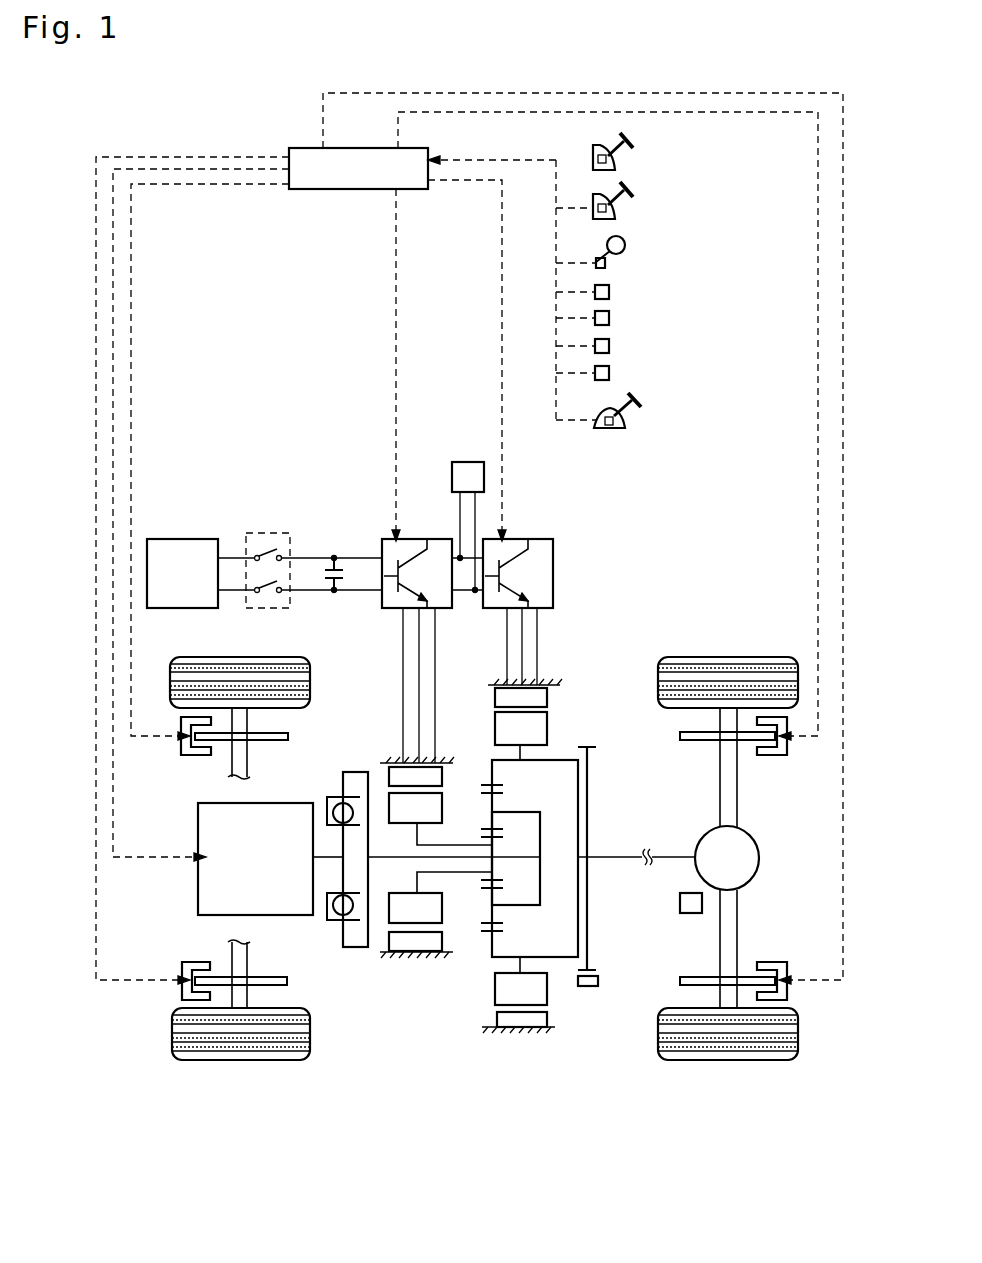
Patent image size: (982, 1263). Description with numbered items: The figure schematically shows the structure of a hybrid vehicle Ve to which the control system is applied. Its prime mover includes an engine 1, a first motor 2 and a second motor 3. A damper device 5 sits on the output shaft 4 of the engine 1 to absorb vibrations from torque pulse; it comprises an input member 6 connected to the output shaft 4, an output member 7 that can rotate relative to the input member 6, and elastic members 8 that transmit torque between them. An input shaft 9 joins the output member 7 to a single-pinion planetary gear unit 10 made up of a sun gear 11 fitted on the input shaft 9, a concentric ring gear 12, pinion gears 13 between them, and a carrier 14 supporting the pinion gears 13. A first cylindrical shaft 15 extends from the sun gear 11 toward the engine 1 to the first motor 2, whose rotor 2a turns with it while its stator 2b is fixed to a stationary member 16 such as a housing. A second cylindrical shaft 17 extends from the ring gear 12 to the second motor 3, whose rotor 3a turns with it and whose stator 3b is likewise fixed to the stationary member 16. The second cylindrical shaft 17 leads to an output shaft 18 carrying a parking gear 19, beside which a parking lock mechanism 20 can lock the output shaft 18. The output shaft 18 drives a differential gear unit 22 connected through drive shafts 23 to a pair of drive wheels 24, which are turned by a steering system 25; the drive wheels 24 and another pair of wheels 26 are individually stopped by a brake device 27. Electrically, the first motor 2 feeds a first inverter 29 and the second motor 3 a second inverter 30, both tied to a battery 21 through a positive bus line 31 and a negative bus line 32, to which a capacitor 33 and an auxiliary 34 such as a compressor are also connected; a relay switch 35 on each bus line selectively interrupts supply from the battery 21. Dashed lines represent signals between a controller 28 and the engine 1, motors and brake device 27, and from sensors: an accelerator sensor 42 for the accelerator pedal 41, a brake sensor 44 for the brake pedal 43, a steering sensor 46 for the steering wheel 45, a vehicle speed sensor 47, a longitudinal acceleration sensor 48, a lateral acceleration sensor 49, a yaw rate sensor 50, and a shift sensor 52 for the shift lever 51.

The engine 1 is at (197, 886).
The first motor 2 is at (393, 748).
The rotor 2a is at (410, 904).
The stator 2b is at (426, 937).
The second motor 3 is at (559, 704).
The rotor 3a is at (497, 993).
The stator 3b is at (544, 1018).
The output shaft 4 is at (326, 812).
The damper device 5 is at (325, 855).
The input member 6 is at (333, 905).
The output member 7 is at (348, 950).
The elastic members 8 is at (338, 795).
The input shaft 9 is at (400, 857).
The single-pinion planetary gear unit 10 is at (488, 756).
The sun gear 11 is at (500, 885).
The ring gear 12 is at (487, 934).
The pinion gears 13 is at (498, 924).
The carrier 14 is at (534, 811).
The first cylindrical shaft 15 is at (466, 844).
The stationary member 16 is at (400, 964).
The second cylindrical shaft 17 is at (563, 757).
The output shaft 18 is at (632, 855).
The parking gear 19 is at (588, 772).
The parking lock mechanism 20 is at (604, 991).
The battery 21 is at (190, 538).
The differential gear unit 22 is at (760, 855).
The drive shafts 23 is at (722, 798).
The drive wheels 24 is at (716, 656).
The steering system 25 is at (680, 901).
The wheels 26 is at (266, 656).
The brake device 27 is at (190, 755).
The controller 28 is at (346, 190).
The first inverter 29 is at (422, 538).
The second inverter 30 is at (531, 538).
The positive bus line 31 is at (359, 557).
The negative bus line 32 is at (357, 592).
The capacitor 33 is at (330, 570).
The auxiliary 34 is at (466, 461).
The relay switch 35 is at (270, 533).
The accelerator pedal 41 is at (630, 139).
The accelerator sensor 42 is at (612, 158).
The brake pedal 43 is at (630, 188).
The brake sensor 44 is at (612, 207).
The steering wheel 45 is at (626, 244).
The steering sensor 46 is at (606, 265).
The vehicle speed sensor 47 is at (610, 292).
The longitudinal acceleration sensor 48 is at (610, 318).
The lateral acceleration sensor 49 is at (610, 346).
The yaw rate sensor 50 is at (610, 373).
The shift lever 51 is at (640, 403).
The shift sensor 52 is at (616, 426).
The vehicle Ve is at (122, 1147).